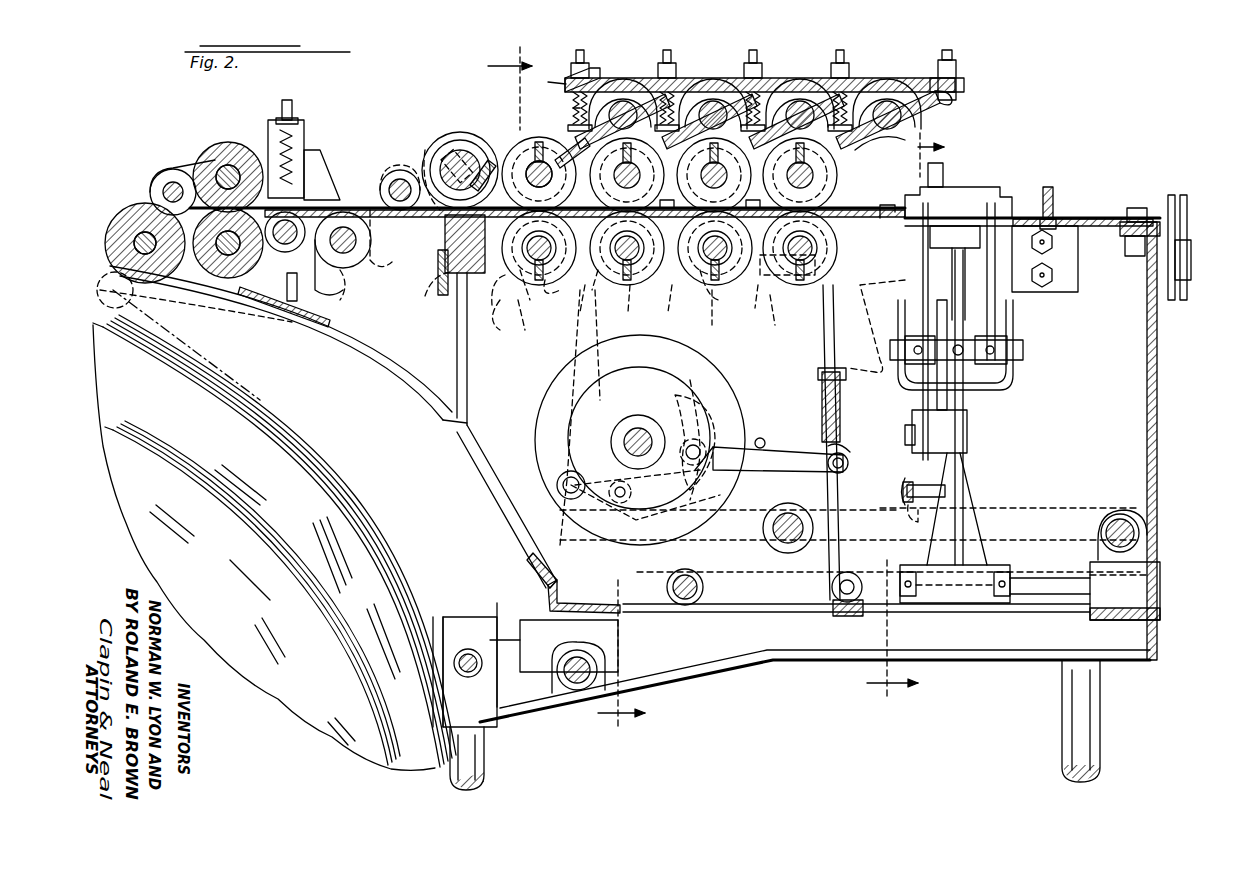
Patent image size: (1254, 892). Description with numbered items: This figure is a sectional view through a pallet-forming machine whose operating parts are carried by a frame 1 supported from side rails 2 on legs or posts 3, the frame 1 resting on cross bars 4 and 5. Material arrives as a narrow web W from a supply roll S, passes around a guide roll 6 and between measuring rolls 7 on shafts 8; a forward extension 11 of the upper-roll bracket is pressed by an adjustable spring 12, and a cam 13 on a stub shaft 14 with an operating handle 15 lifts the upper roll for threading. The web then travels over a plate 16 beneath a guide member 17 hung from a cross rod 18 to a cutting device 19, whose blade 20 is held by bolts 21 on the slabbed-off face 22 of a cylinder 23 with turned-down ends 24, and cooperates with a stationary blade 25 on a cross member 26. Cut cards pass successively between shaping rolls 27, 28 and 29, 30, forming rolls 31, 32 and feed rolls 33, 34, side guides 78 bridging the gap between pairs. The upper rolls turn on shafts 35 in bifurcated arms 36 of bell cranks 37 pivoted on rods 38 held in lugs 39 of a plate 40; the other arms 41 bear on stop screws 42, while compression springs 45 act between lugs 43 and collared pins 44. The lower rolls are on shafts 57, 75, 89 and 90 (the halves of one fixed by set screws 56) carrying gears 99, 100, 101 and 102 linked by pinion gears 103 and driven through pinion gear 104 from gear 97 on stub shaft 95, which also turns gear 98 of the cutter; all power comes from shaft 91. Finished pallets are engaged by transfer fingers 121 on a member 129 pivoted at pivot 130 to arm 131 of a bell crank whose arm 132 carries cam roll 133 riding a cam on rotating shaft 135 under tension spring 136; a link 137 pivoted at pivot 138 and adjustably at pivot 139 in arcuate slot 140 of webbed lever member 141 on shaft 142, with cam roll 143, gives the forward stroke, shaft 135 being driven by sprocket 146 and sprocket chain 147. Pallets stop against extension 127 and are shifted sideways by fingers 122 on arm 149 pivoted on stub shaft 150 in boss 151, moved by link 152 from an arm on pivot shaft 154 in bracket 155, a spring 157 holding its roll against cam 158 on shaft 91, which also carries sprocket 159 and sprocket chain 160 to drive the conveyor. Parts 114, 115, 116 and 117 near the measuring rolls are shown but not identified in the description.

The frame 1 is at (458, 440).
The side rails 2 is at (520, 600).
The legs or posts 3 is at (1078, 750).
The cross bar 4 is at (1128, 522).
The cross bar 5 is at (752, 580).
The guide roll 6 is at (125, 228).
The advancing or measuring rolls 7 is at (232, 150).
The shafts 8 is at (222, 143).
The forward extension 11 is at (305, 185).
The adjustable spring 12 is at (300, 160).
The cam 13 is at (282, 250).
The stub shaft 14 is at (318, 255).
The operating handle 15 is at (115, 294).
The plate 16 is at (380, 247).
The guide member 17 is at (330, 204).
The cross rod 18 is at (398, 178).
The cutting device 19 is at (462, 130).
The blade 20 is at (490, 150).
The bolts 21 is at (542, 140).
The slabbed off face 22 is at (480, 140).
The cylinder 23 is at (452, 150).
The turned down ends (shaft) 24 is at (425, 150).
The stationary blade 25 is at (440, 240).
The cross member 26 is at (427, 288).
The upper shaping roll 27 is at (560, 140).
The lower shaping roll 28 is at (537, 297).
The upper shaping roll 29 is at (627, 175).
The lower shaping roll 30 is at (630, 270).
The upper forming roll 31 is at (714, 175).
The lower forming roll 32 is at (712, 270).
The upper feed roll 33 is at (800, 175).
The lower feed roll 34 is at (800, 270).
The shafts 35 is at (838, 188).
The bifurcated arm 36 is at (612, 102).
The bell cranks 37 is at (905, 125).
The rods 38 is at (618, 78).
The lugs 39 is at (640, 110).
The plate 40 is at (858, 100).
The arms 41 is at (905, 88).
The adjustable stop screws 42 is at (672, 65).
The lugs 43 is at (570, 108).
The collared pins 44 is at (702, 83).
The compression springs 45 is at (953, 150).
The set screws 56 is at (536, 322).
The shaft 57 is at (532, 256).
The shaft 75 is at (606, 289).
The side guides 78 is at (710, 206).
The shaft 89 is at (711, 297).
The shaft 90 is at (790, 290).
The shaft 91 is at (1192, 258).
The stub shaft 95 is at (491, 302).
The gear 97 is at (445, 280).
The gear 98 is at (420, 170).
The gear 99 is at (560, 295).
The gear 100 is at (635, 309).
The gear 101 is at (727, 317).
The gear 102 is at (767, 319).
The intermediate pinion gears 103 is at (678, 308).
The pinion gear 104 is at (490, 324).
The guide plate 114 is at (345, 297).
The guide plate 115 is at (314, 290).
The guide strip 116 is at (284, 310).
The roller 117 is at (215, 150).
The transfer fingers 121 is at (840, 326).
The transfer fingers 122 is at (960, 315).
The extension of centering guide 127 is at (1055, 200).
The member 129 is at (825, 426).
The pivot 130 is at (845, 612).
The arm 131 is at (790, 612).
The arm 132 is at (625, 610).
The cam roll 133 is at (645, 480).
The rotating shaft 135 is at (628, 432).
The tension spring 136 is at (740, 424).
The link 137 is at (760, 472).
The pivot 138 is at (836, 474).
The adjustable pivot 139 is at (677, 440).
The arcuate slot 140 is at (770, 515).
The webbed lever member 141 is at (735, 400).
The shaft 142 is at (690, 605).
The cam roll 143 is at (580, 470).
The sprocket 146 is at (620, 372).
The sprocket chain 147 is at (590, 352).
The arm 149 is at (970, 405).
The stub shaft 150 is at (1035, 580).
The boss 151 is at (1095, 575).
The link 152 is at (937, 395).
The pivot shaft 154 is at (1000, 240).
The bracket 155 is at (945, 195).
The spring 157 is at (950, 485).
The cam 158 is at (945, 180).
The sprocket 159 is at (1190, 238).
The sprocket chain 160 is at (1190, 212).
The roll (supply) S is at (365, 535).
The web W is at (215, 355).